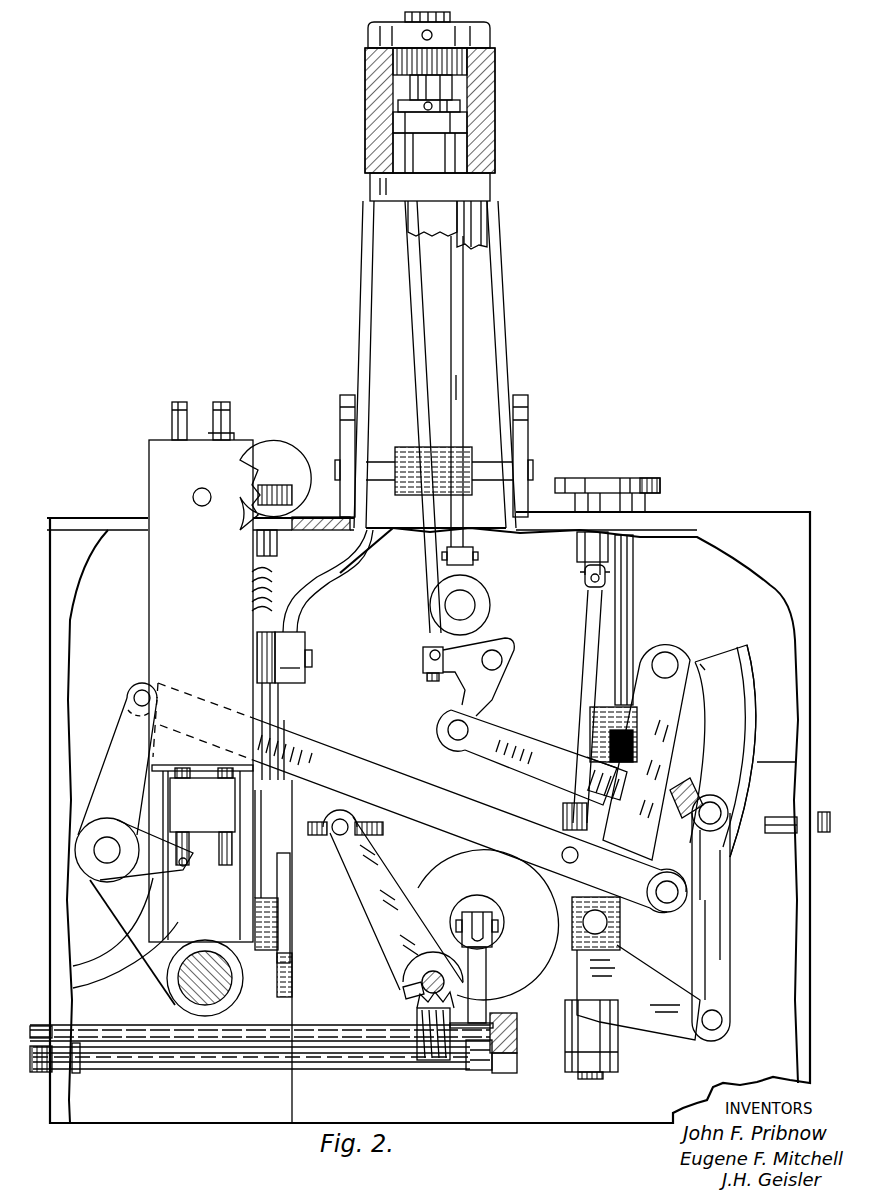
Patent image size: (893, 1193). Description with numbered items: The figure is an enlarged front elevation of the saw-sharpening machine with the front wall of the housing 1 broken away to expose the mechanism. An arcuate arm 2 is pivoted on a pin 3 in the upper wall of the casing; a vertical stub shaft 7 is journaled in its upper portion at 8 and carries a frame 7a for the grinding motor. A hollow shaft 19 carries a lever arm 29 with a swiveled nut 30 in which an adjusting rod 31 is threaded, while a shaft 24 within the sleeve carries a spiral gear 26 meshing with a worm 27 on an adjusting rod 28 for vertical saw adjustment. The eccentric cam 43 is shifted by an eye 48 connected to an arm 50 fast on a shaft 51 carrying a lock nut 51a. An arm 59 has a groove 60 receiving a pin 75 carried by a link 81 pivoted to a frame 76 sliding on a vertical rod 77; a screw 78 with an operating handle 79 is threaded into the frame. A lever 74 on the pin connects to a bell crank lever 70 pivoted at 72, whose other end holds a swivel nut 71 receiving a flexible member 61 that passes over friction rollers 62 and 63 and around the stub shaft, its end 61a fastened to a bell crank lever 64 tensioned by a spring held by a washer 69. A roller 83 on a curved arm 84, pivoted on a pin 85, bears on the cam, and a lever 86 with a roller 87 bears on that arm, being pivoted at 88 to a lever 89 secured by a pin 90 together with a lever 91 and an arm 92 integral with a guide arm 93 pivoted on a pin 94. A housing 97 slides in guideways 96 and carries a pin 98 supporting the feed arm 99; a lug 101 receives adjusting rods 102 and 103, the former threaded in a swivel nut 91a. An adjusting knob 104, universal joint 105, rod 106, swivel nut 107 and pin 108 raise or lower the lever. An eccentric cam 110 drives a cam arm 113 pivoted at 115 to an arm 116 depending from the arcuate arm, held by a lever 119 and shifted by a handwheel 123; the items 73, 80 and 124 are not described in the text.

The housing 1 is at (95, 520).
The arcuate arm 2 is at (500, 327).
The pin 3 is at (460, 510).
The vertical stub shaft 7 is at (395, 92).
The frame 7a is at (478, 215).
The journal 8 is at (495, 54).
The hollow shaft 19 is at (421, 980).
The shaft 24 is at (408, 993).
The spiral gear 26 is at (400, 1045).
The worm 27 is at (440, 1065).
The adjusting rod 28 is at (302, 1040).
The lever arm 29 is at (400, 950).
The swiveled nut 30 is at (338, 836).
The adjusting rod 31 is at (383, 828).
The eccentric cam 43 is at (510, 985).
The eye 48 is at (470, 905).
The arm 50 is at (487, 966).
The shaft 51 is at (336, 1060).
The lock nut 51a is at (52, 1073).
The arm 59 is at (745, 670).
The groove 60 is at (715, 660).
The flexible member 61 is at (462, 105).
The end of flexible member 61a is at (457, 375).
The friction roller 62 is at (460, 125).
The friction roller 63 is at (470, 450).
The bell crank lever 64 is at (480, 556).
The washer 69 is at (485, 590).
The bell crank lever 70 is at (460, 695).
The swivel nut 71 is at (423, 655).
The pivot 72 is at (502, 660).
The pivot 73 is at (448, 731).
The lever 74 is at (500, 737).
The pin 75 is at (722, 813).
The frame 76 is at (662, 1020).
The vertical rod 77 is at (592, 1077).
The screw 78 is at (625, 600).
The operating handle 79 is at (660, 483).
The pivot 80 is at (722, 1022).
The link 81 is at (720, 955).
The roller 83 is at (605, 932).
The curved arm 84 is at (688, 680).
The pin 85 is at (668, 653).
The lever 86 is at (320, 752).
The roller 87 is at (667, 903).
The pivot 88 is at (140, 698).
The lever 89 is at (125, 742).
The pin 90 is at (100, 850).
The lever 91 is at (120, 872).
The swivel nut 91a is at (122, 910).
The arm 92 is at (73, 966).
The guide arm 93 is at (73, 988).
The pin 94 is at (190, 990).
The guideways 96 is at (160, 780).
The housing 97 is at (155, 605).
The pin 98 is at (193, 497).
The arm 99 is at (215, 475).
The lug 101 is at (178, 800).
The adjusting rod 102 is at (178, 418).
The adjusting rod 103 is at (225, 418).
The adjusting knob 104 is at (608, 482).
The universal joint 105 is at (588, 582).
The rod 106 is at (582, 700).
The swivel nut 107 is at (560, 823).
The pin 108 is at (565, 850).
The eccentric cam 110 is at (292, 978).
The cam arm 113 is at (272, 698).
The pivot 115 is at (312, 657).
The arm 116 is at (308, 590).
The lever 119 is at (280, 720).
The handwheel 123 is at (272, 488).
The shaft 124 is at (272, 556).